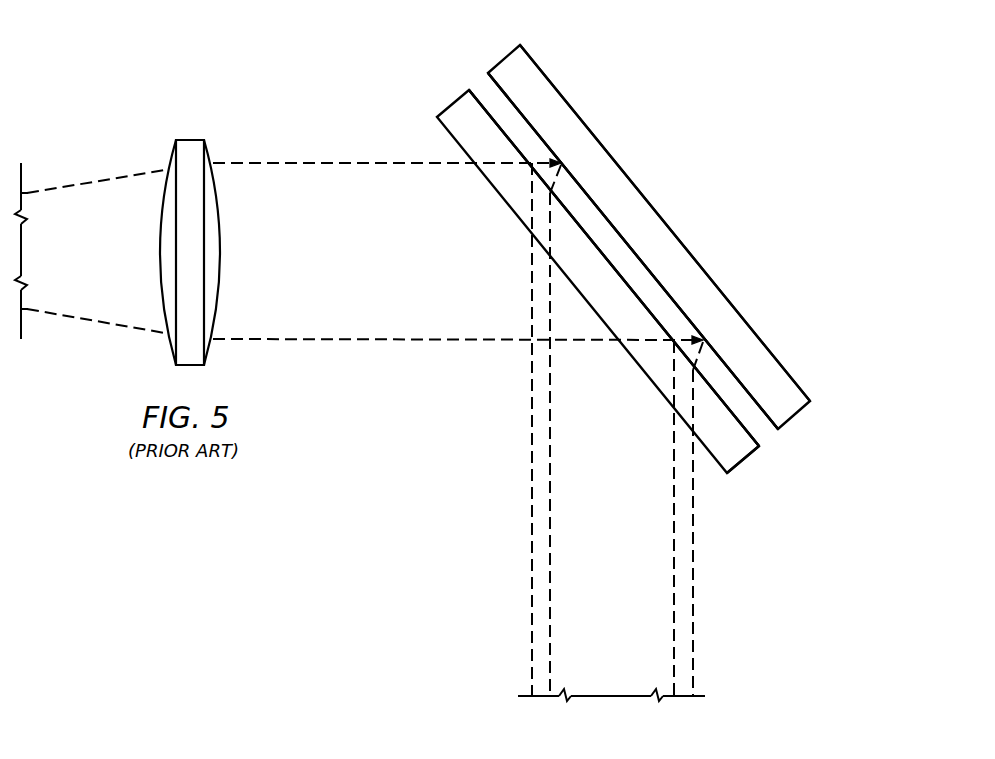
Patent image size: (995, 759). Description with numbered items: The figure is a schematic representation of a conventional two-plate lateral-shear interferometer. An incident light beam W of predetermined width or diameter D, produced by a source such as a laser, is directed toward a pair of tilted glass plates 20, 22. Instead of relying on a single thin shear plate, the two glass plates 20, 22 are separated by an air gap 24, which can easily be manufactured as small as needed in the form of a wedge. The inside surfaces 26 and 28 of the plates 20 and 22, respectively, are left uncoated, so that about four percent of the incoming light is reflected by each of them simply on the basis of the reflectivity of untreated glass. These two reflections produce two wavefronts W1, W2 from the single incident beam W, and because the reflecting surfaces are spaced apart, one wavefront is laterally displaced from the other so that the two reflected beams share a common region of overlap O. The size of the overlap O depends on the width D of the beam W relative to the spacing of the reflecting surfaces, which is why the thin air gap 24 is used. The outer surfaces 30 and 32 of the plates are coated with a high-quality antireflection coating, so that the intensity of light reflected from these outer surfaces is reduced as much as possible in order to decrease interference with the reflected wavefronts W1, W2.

The glass plate 20 is at (444, 139).
The glass plate 22 is at (584, 105).
The air gap 24 is at (485, 92).
The inside surface 26 is at (623, 279).
The inside surface 28 is at (595, 210).
The outer surface 30 is at (722, 470).
The outer surface 32 is at (652, 205).
The width or diameter D is at (273, 170).
The incident light beam W is at (398, 324).
The wavefront W1 is at (544, 493).
The wavefront W2 is at (563, 553).
The region of overlap O is at (563, 613).